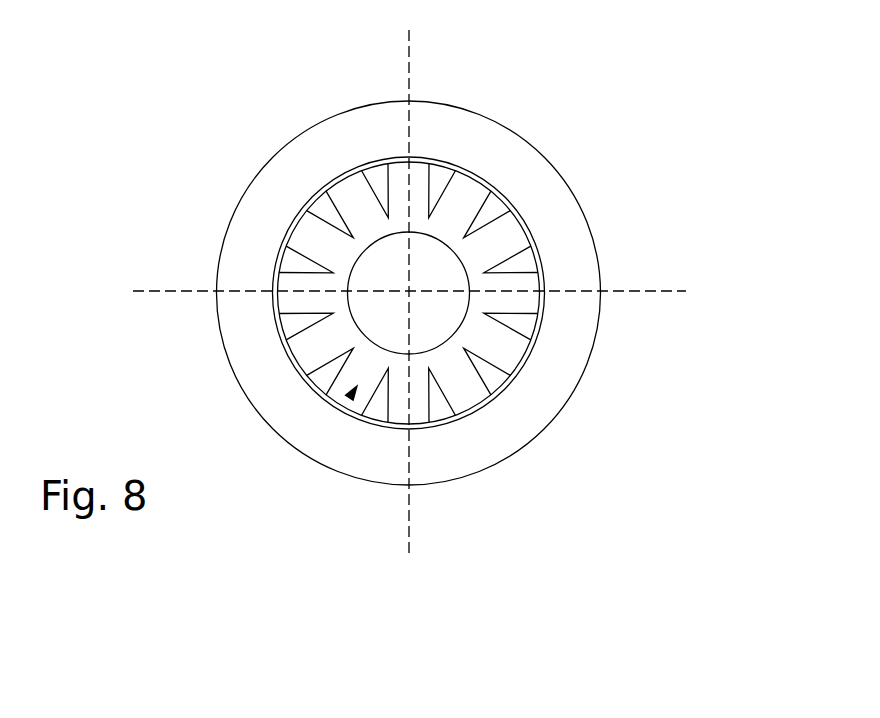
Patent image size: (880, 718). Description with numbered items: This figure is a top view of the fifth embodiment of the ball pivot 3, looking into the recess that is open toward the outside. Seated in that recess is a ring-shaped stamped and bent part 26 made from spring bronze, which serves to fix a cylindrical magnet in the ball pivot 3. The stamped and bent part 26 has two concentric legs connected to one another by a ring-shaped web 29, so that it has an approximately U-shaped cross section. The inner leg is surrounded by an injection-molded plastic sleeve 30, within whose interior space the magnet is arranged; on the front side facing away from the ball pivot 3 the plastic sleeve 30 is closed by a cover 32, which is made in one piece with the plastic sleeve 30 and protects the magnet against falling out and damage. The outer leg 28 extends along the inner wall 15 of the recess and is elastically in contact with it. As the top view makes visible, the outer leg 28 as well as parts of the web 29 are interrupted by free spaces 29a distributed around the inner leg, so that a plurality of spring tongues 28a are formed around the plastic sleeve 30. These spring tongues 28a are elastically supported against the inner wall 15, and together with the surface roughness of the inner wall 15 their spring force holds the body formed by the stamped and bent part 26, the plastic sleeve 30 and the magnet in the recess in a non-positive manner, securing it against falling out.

The ball pivot 3 is at (517, 423).
The inner wall 15 is at (543, 333).
The stamped and bent part 26 is at (348, 396).
The outer leg 28 is at (292, 223).
The spring tongues 28a is at (510, 348).
The web 29 is at (472, 255).
The free spaces 29a is at (497, 209).
The plastic sleeve 30 is at (377, 240).
The cover 32 is at (436, 268).